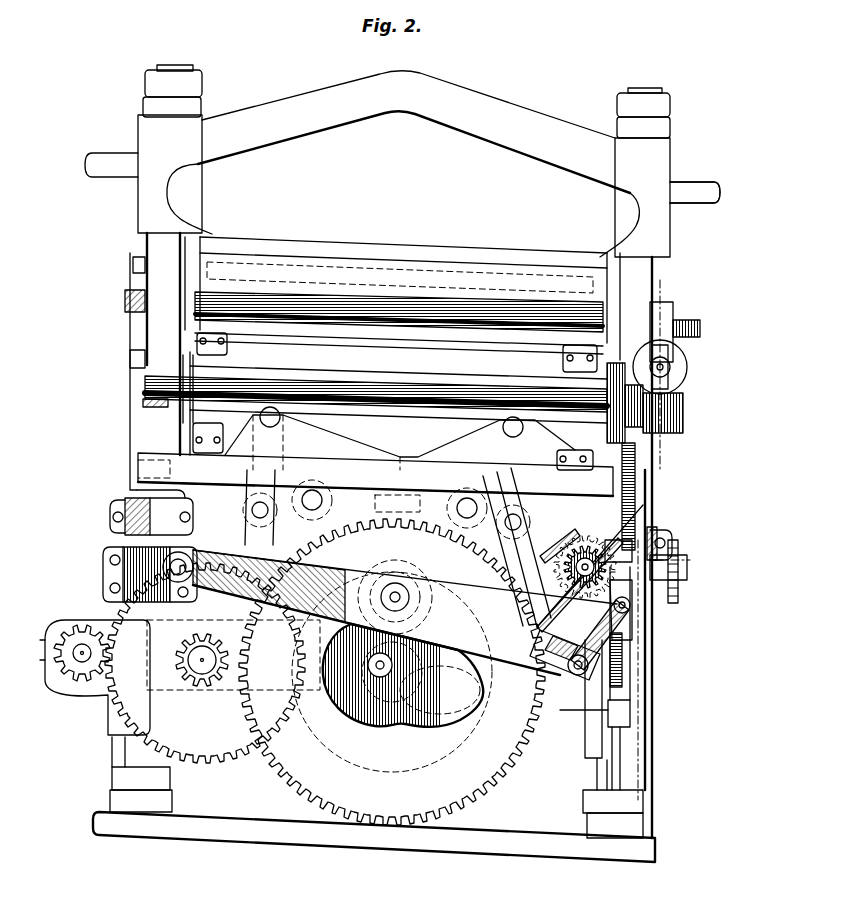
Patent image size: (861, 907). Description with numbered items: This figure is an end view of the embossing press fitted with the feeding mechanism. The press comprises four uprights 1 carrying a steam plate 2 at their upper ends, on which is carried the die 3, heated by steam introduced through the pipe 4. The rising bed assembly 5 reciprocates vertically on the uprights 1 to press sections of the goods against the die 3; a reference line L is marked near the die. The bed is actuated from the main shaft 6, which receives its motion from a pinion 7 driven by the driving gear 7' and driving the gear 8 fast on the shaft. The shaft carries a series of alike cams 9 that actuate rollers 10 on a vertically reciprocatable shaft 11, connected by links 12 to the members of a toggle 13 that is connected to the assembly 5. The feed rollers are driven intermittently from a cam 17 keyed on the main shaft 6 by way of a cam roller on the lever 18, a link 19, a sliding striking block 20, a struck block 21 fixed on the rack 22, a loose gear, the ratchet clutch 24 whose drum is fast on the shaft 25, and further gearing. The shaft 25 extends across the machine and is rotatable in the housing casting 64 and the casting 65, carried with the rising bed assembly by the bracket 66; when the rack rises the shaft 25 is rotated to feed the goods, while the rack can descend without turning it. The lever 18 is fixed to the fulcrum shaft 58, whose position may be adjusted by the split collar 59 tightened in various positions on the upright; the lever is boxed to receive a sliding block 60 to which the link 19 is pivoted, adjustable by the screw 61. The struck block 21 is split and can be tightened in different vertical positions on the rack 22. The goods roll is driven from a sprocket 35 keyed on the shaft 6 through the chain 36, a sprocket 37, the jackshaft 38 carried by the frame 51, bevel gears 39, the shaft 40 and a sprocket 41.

The uprights 1 is at (150, 238).
The steam plate 2 is at (475, 272).
The die 3 is at (262, 292).
The chain 36 is at (405, 310).
The pipe 4 is at (695, 190).
The reference line L is at (650, 264).
The bracket 66 is at (215, 413).
The rising bed assembly 5 is at (398, 402).
The shaft 25 is at (400, 395).
The casting 65 is at (150, 400).
The links 12 is at (347, 503).
The ratchet clutch 24 is at (617, 365).
The housing casting 64 is at (683, 405).
The rack 22 is at (640, 460).
The frame 51 is at (125, 500).
The split collar 59 is at (140, 573).
The fulcrum shaft 58 is at (183, 565).
The vertically reciprocatable shaft 11 is at (405, 608).
The cam 17 is at (430, 590).
The toggle 13 is at (248, 535).
The rollers 10 is at (395, 500).
The gear 8 is at (500, 765).
The main shaft 6 is at (363, 727).
The sprocket 35 is at (440, 690).
The cams 9 is at (277, 735).
The pinion 7 is at (132, 681).
The driving gear 7' is at (202, 710).
The bevel gears 39 is at (583, 555).
The sprocket 37 is at (578, 574).
The jackshaft 38 is at (560, 560).
The struck block 21 is at (670, 540).
The shaft 40 is at (690, 560).
The sprocket 41 is at (680, 590).
The sliding striking block 20 is at (640, 624).
The link 19 is at (607, 627).
The lever 18 is at (520, 660).
The screw 61 is at (560, 680).
The sliding block 60 is at (577, 690).